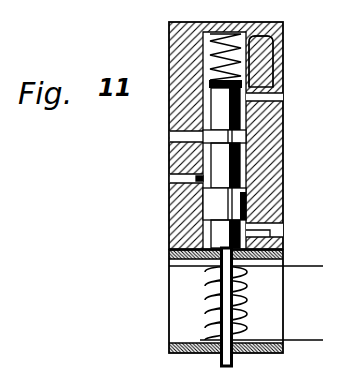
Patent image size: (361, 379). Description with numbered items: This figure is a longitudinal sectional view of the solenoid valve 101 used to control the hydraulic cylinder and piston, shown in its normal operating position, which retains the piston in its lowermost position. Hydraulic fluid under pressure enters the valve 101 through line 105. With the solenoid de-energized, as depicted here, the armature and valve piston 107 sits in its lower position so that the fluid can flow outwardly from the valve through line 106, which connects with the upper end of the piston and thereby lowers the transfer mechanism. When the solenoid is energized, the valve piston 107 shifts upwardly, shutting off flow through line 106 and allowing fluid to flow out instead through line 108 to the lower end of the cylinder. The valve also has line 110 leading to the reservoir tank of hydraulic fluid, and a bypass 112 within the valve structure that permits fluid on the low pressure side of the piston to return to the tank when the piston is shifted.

The solenoid valve 101 is at (284, 27).
The line 105 is at (169, 142).
The line 106 is at (169, 183).
The valve piston 107 is at (243, 118).
The line 108 is at (260, 93).
The line 110 is at (337, 236).
The bypass 112 is at (268, 147).